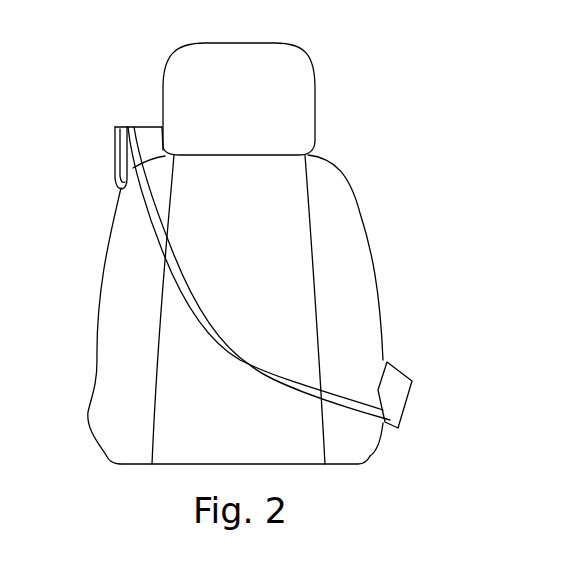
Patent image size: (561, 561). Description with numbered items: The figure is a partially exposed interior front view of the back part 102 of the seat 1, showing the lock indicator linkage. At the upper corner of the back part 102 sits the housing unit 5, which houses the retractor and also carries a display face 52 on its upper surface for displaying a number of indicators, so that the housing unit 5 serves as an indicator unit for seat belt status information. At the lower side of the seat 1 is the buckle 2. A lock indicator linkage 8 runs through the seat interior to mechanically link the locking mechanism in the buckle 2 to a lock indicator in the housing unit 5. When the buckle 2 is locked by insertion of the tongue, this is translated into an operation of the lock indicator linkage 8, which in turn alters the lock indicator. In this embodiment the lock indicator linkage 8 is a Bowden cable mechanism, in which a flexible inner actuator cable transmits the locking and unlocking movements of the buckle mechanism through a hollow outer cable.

The seat 1 is at (347, 169).
The back part 102 is at (285, 262).
The housing unit 5 is at (116, 151).
The display face 52 is at (142, 134).
The lock indicator linkage 8 is at (175, 270).
The buckle 2 is at (394, 387).